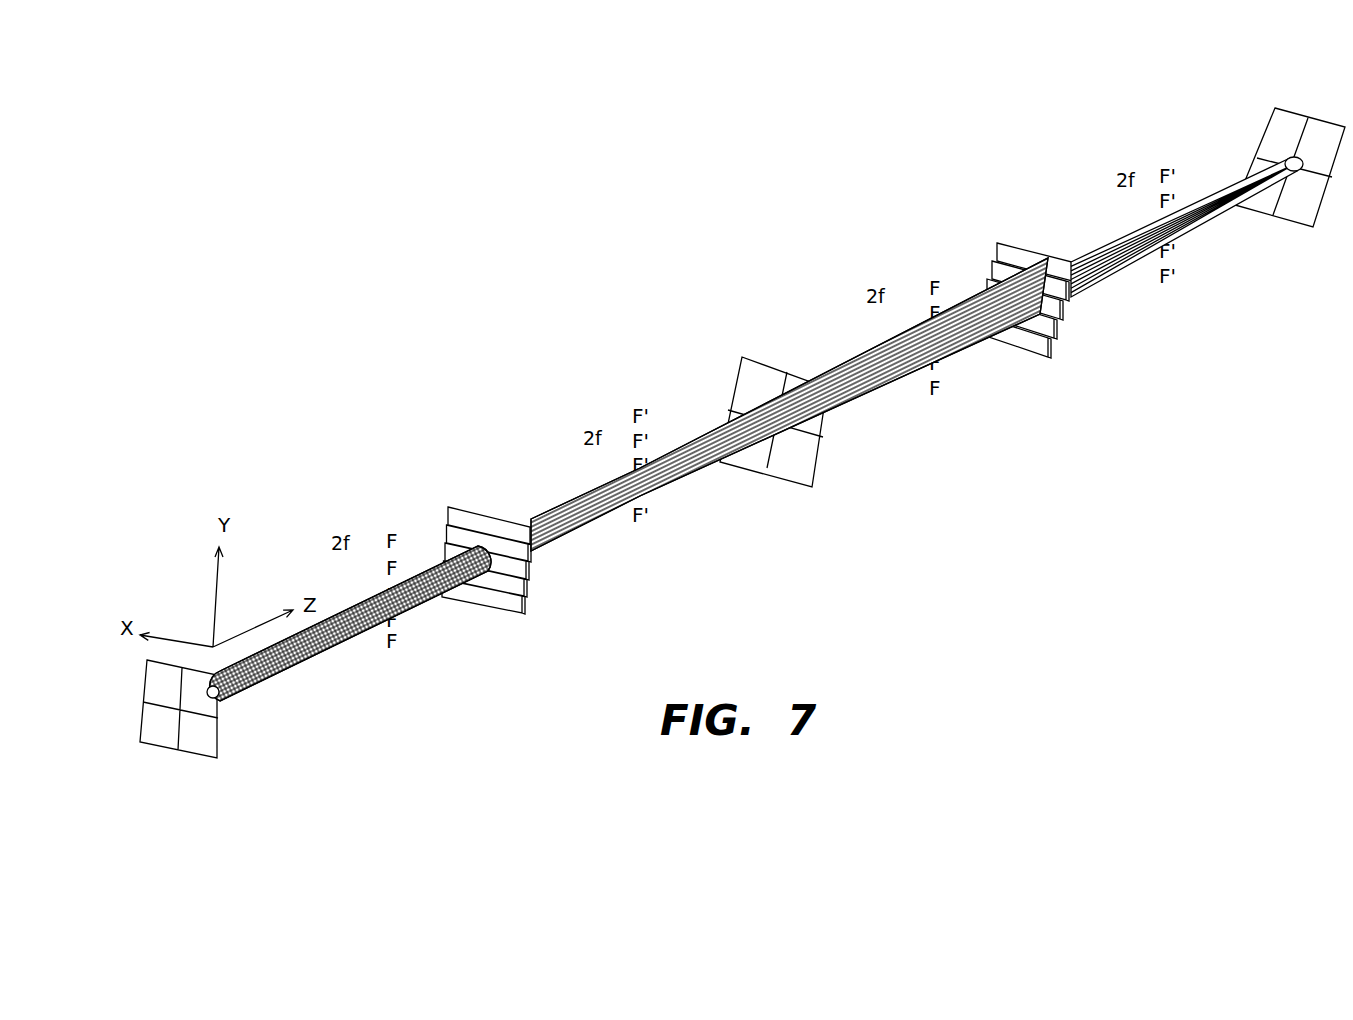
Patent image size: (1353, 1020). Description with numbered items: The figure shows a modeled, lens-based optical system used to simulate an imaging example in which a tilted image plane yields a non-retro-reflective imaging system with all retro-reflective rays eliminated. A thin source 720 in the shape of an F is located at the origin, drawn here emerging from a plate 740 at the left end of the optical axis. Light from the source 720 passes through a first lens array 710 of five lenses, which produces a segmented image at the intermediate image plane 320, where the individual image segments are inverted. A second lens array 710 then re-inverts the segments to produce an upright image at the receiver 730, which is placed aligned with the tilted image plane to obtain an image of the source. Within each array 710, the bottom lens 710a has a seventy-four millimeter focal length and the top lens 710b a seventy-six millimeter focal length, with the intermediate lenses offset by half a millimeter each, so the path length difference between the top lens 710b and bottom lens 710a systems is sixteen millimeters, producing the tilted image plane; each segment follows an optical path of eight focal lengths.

The input plane 740 is at (197, 713).
The thin source 720 is at (200, 712).
The lens array 710 is at (453, 597).
The bottom lens 710a is at (1043, 357).
The top lens 710b is at (997, 243).
The intermediate image plane 320 is at (748, 472).
The receiver 730 is at (1248, 213).